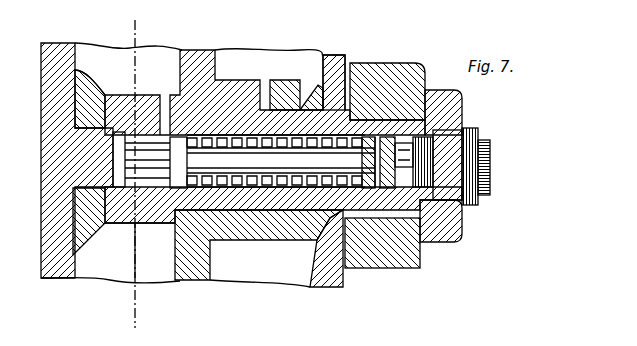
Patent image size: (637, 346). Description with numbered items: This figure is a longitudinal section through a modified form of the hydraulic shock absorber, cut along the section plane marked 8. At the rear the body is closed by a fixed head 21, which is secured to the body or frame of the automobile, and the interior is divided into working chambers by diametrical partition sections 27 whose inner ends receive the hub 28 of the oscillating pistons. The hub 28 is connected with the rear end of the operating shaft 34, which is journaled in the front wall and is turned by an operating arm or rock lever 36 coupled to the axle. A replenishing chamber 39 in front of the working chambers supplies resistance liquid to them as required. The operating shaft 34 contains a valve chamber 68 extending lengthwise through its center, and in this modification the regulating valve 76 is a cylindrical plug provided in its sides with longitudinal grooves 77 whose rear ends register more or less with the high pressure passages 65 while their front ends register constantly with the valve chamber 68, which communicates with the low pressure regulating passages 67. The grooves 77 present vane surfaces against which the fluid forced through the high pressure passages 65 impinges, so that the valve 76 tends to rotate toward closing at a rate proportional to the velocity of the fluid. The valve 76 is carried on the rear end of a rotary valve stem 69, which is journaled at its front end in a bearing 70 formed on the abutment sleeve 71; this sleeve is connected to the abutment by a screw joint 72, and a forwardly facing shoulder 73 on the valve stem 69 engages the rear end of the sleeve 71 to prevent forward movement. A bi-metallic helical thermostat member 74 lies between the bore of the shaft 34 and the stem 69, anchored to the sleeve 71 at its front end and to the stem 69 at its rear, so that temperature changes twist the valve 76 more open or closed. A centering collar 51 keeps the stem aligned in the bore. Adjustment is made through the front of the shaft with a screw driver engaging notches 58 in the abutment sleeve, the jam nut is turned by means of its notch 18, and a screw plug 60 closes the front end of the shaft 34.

The fixed head 21 is at (45, 50).
The partition sections 27 is at (87, 50).
The section line 8- 8 is at (130, 170).
The low pressure regulating passages 67 is at (167, 97).
The centering collar 51 is at (269, 55).
The replenishing chamber 39 is at (295, 63).
The rotary valve stem 69 is at (220, 163).
The forwardly facing shoulder 73 is at (358, 143).
The screw joint 72 is at (398, 130).
The abutment sleeve 71 is at (462, 122).
The notch 18 is at (430, 163).
The screw plug 60 is at (490, 153).
The notches 58 is at (420, 167).
The bearing 70 is at (458, 234).
The operating arm 36 is at (400, 268).
The operating shaft 34 is at (265, 210).
The valve chamber 68 is at (233, 210).
The bi-metallic helical thermostat member 74 is at (287, 213).
The hub 28 is at (73, 222).
The high pressure passages 65 is at (132, 225).
The regulating valve 76 is at (140, 152).
The longitudinal grooves 77 is at (143, 167).